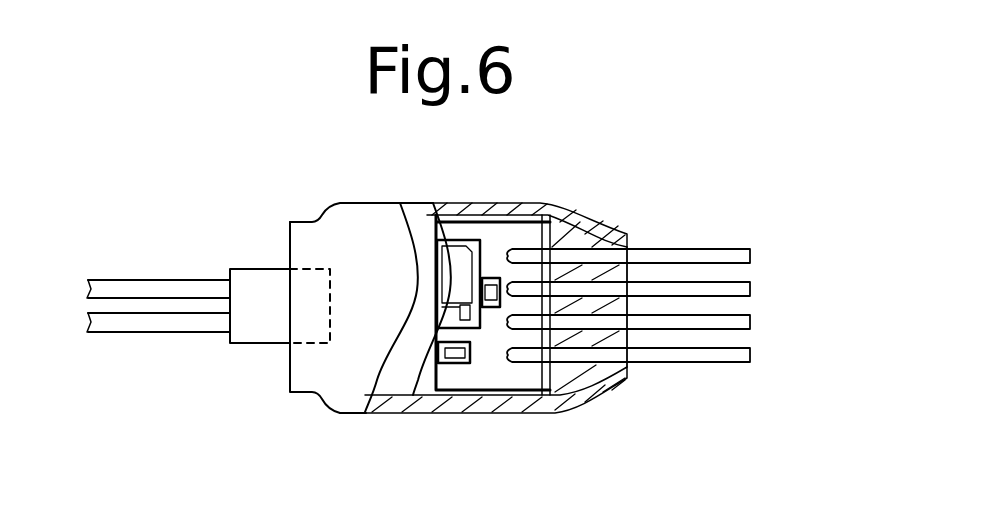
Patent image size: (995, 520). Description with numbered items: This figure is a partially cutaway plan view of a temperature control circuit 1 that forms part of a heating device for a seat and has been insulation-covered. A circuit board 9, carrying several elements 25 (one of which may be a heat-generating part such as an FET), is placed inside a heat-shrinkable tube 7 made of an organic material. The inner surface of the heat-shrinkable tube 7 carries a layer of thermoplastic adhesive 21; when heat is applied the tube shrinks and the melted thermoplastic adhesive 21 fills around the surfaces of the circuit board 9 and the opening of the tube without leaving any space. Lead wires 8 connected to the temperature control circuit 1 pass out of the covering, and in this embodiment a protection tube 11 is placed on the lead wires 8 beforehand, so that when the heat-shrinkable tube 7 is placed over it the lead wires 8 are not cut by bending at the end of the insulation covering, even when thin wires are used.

The temperature control circuit 1 is at (608, 222).
The heat-shrinkable tube 7 is at (368, 217).
The lead wires 8 is at (157, 327).
The circuit board 9 is at (520, 228).
The protection tube 11 is at (243, 283).
The thermoplastic adhesive 21 is at (395, 390).
The element 25 is at (458, 363).